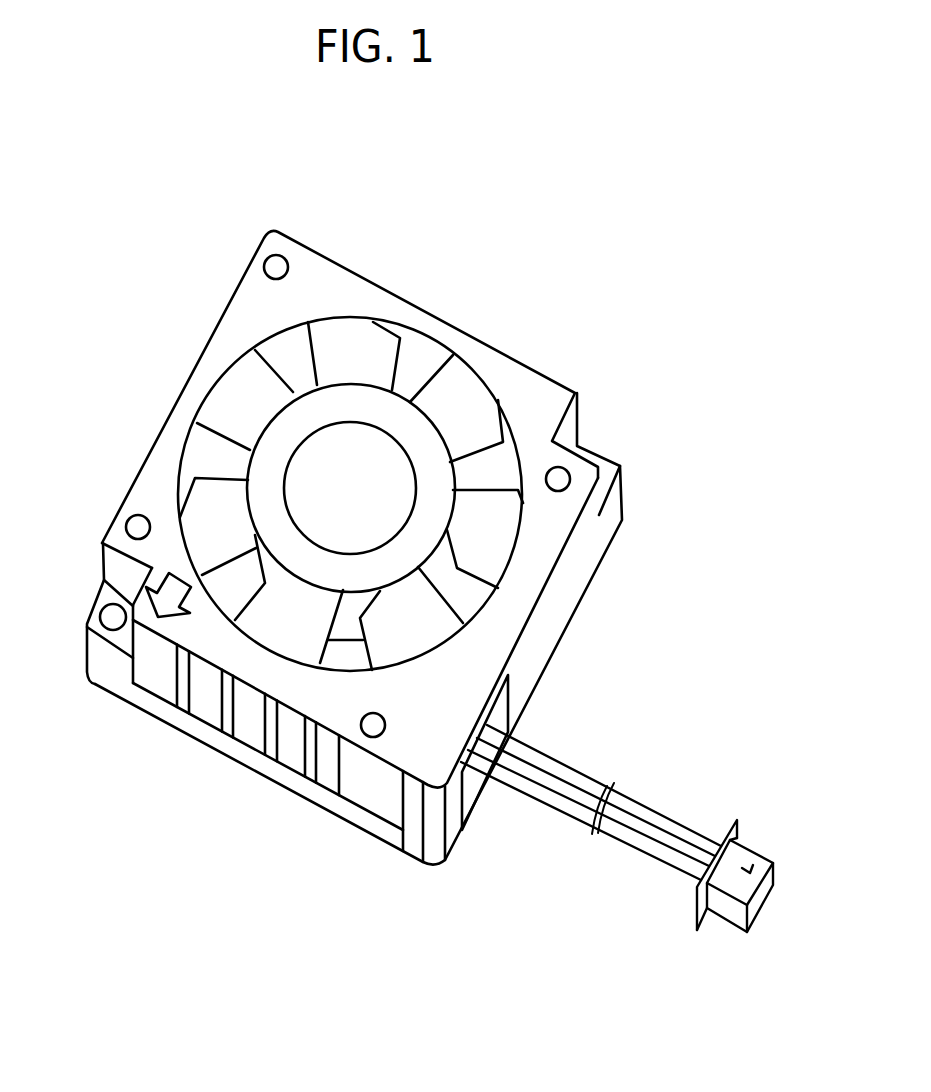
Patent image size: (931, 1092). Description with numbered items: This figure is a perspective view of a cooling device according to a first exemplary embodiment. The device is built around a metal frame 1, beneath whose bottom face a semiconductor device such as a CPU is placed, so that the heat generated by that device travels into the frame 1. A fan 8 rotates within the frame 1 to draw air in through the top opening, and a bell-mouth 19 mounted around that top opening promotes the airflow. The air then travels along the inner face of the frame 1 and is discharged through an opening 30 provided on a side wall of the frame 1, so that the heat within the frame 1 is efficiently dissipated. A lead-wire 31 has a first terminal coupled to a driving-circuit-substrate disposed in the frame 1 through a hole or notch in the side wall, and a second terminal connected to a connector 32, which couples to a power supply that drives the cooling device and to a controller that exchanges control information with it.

The metal frame 1 is at (375, 803).
The fan 8 is at (352, 357).
The bell-mouth 19 is at (255, 313).
The opening 30 is at (208, 690).
The lead-wire 31 is at (670, 817).
The connector 32 is at (750, 860).